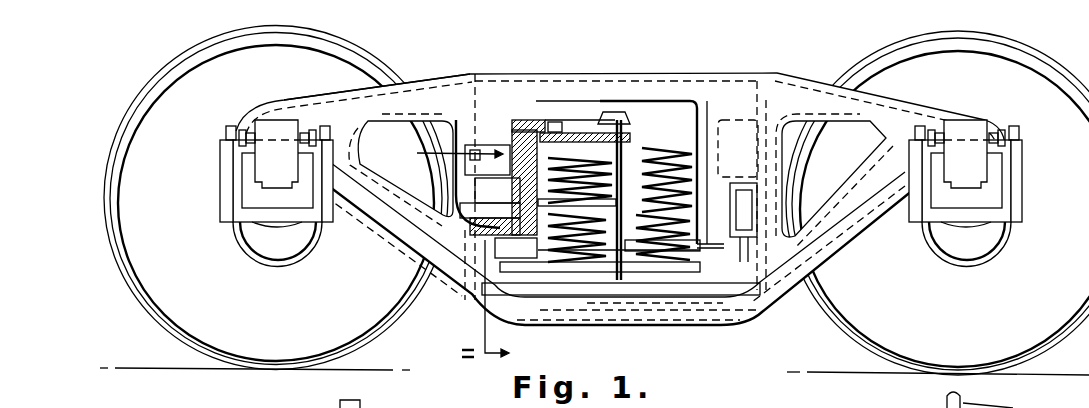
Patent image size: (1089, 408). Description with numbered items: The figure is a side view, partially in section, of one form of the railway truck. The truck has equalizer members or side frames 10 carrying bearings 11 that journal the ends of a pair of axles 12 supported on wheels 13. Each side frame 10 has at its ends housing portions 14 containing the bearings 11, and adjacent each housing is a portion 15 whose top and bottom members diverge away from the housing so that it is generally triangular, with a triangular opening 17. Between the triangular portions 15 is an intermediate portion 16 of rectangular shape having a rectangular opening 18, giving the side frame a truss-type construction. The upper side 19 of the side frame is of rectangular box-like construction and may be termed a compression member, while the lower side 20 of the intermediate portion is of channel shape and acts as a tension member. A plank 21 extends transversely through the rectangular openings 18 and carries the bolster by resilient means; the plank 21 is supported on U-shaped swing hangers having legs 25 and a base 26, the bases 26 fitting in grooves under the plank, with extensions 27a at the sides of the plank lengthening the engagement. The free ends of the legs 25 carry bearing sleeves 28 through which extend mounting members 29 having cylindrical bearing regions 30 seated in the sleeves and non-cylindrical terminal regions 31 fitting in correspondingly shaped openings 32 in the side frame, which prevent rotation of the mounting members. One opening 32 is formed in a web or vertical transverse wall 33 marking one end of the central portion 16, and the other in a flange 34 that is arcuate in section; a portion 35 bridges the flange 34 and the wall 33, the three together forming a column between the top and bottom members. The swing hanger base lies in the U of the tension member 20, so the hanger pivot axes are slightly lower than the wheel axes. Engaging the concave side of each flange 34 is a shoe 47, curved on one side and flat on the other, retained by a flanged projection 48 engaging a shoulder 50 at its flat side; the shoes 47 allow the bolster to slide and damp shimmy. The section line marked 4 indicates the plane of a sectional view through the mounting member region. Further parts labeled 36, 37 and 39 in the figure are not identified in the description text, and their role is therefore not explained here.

The section line 4- 4 is at (454, 258).
The side frame 10 is at (438, 68).
The bearing 11 is at (242, 212).
The axle 12 is at (324, 402).
The wheel 13 is at (396, 338).
The housing portion 14 is at (228, 236).
The triangular portion 15 is at (410, 248).
The intermediate portion 16 is at (672, 82).
The triangular opening 17 is at (372, 129).
The rectangular opening 18 is at (552, 125).
The upper side of side frame 19 is at (545, 73).
The lower side of intermediate portion 20 is at (528, 325).
The plank 21 is at (516, 248).
The leg 25 is at (740, 248).
The base 26 is at (666, 322).
The extension 27a is at (718, 326).
The bearing sleeve 28 is at (577, 182).
The mounting member 29 is at (566, 176).
The bearing region 30 is at (497, 205).
The terminal region 31 is at (453, 232).
The opening 32 is at (600, 287).
The web 33 is at (757, 99).
The flange 34 is at (545, 141).
The bridging portion 35 is at (520, 127).
The spring seat 36 is at (600, 326).
The bolster pocket 37 is at (491, 108).
The load spring 39 is at (600, 305).
The shoe 47 is at (541, 161).
The flanged projection 48 is at (587, 118).
The shoulder 50 is at (529, 125).